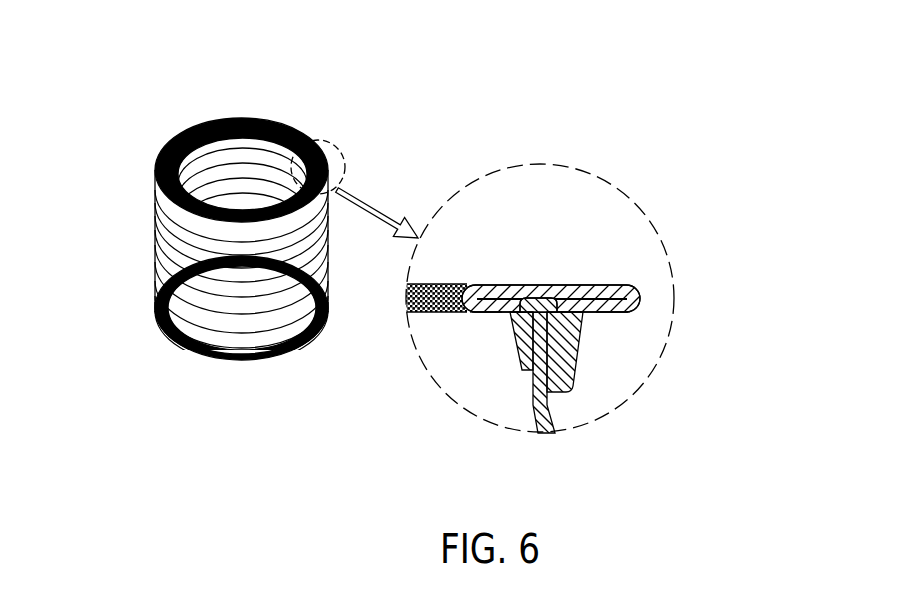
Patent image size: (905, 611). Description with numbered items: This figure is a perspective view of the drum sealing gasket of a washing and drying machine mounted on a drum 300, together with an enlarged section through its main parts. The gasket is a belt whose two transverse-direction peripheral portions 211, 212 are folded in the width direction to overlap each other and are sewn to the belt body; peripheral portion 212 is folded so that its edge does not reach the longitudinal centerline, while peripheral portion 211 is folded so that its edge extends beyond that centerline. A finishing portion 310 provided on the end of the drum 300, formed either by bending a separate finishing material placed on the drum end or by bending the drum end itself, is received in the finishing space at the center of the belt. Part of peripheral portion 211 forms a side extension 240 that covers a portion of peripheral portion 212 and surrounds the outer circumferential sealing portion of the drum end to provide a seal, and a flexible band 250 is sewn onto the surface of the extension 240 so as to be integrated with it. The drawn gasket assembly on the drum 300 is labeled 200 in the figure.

The ring member 200 is at (260, 110).
The transverse-direction peripheral portion 211 is at (600, 316).
The transverse-direction peripheral portion 212 is at (492, 308).
The side extension 240 is at (555, 380).
The flexible band 250 is at (570, 362).
The drum 300 is at (152, 222).
The finishing portion 310 is at (541, 300).